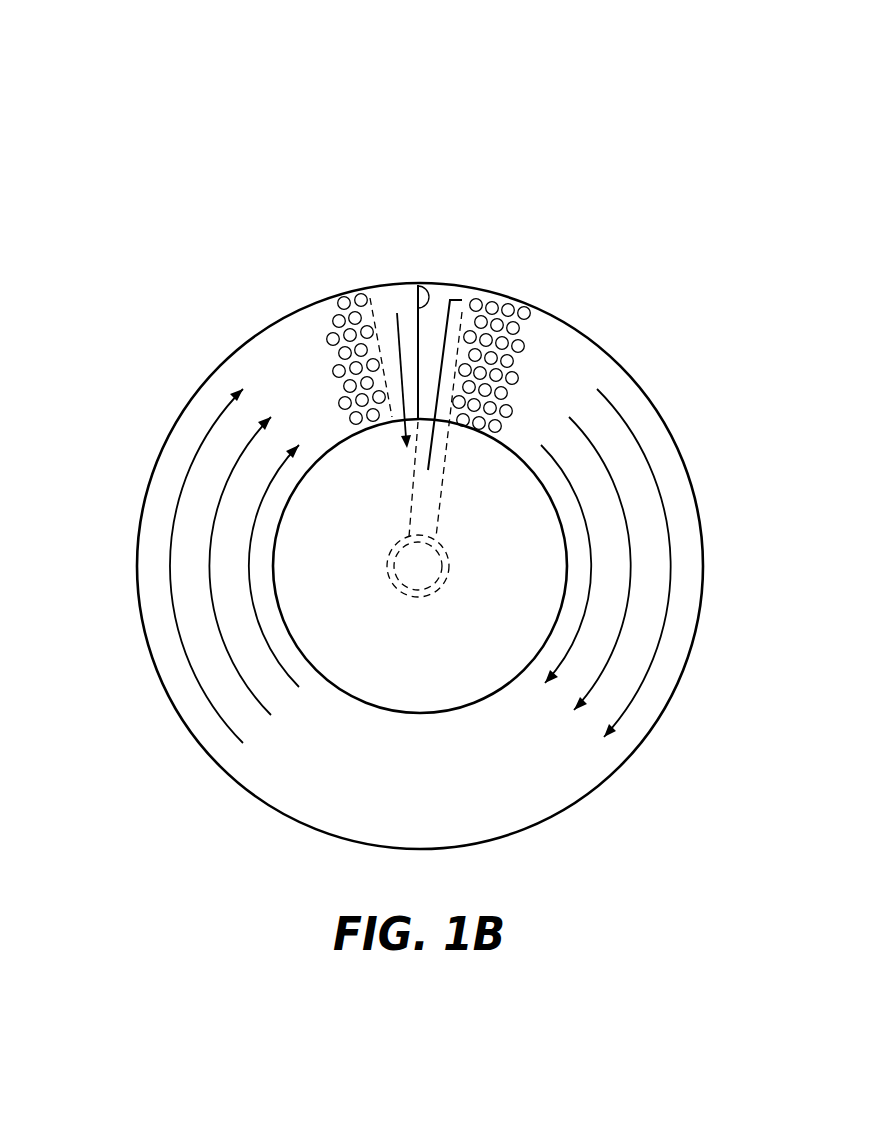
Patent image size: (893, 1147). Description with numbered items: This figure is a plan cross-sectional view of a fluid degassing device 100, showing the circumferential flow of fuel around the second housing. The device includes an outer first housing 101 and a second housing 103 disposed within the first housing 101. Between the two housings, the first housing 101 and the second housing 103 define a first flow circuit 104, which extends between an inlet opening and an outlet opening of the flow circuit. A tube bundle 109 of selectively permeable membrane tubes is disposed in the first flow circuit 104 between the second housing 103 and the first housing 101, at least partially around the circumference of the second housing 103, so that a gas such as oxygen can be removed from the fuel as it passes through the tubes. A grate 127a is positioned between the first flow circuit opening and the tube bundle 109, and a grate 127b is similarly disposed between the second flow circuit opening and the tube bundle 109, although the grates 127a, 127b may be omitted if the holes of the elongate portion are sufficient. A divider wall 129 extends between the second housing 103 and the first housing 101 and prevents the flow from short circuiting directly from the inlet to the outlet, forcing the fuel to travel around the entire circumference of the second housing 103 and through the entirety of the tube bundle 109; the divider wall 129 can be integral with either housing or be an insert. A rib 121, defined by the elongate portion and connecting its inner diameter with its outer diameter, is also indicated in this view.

The fluid degassing device 100 is at (174, 79).
The first housing 101 is at (234, 347).
The second housing 103 is at (332, 450).
The first flow circuit 104 is at (420, 566).
The tube bundle 109 is at (461, 304).
The rib 121 is at (438, 508).
The grate 127a is at (520, 266).
The grate 127b is at (349, 316).
The divider wall 129 is at (427, 284).